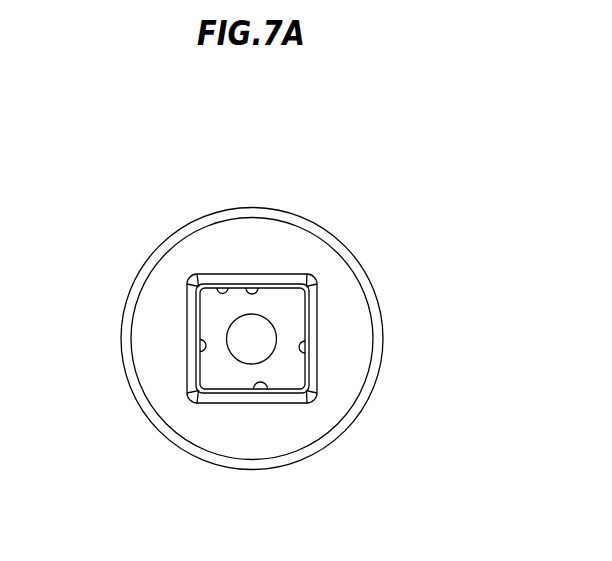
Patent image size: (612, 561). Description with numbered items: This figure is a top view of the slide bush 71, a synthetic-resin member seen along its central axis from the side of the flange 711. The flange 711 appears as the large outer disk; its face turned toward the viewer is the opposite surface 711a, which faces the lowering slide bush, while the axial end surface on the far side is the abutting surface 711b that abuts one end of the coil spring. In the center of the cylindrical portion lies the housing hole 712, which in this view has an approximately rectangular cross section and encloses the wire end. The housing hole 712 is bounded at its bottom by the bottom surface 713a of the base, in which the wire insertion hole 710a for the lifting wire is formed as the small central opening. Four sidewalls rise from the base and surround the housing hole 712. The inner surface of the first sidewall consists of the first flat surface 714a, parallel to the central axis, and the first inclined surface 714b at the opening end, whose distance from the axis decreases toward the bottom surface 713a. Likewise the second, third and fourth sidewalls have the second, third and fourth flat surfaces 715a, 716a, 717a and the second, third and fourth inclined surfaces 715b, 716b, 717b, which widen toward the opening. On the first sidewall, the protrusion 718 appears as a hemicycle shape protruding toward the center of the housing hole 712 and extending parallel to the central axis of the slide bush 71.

The slide bush 71 is at (81, 135).
The wire insertion hole 710a is at (271, 318).
The flange 711 is at (375, 260).
The opposite surface 711a is at (347, 302).
The abutting surface 711b is at (382, 332).
The housing hole 712 is at (195, 305).
The bottom surface 713a is at (231, 374).
The first flat surface 714a is at (220, 285).
The first inclined surface 714b is at (237, 280).
The second flat surface 715a is at (268, 389).
The second inclined surface 715b is at (247, 397).
The third flat surface 716a is at (196, 347).
The third inclined surface 716b is at (191, 335).
The fourth flat surface 717a is at (308, 360).
The fourth inclined surface 717b is at (308, 340).
The protrusion 718 is at (254, 284).